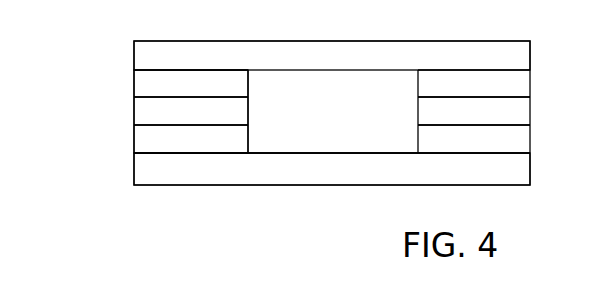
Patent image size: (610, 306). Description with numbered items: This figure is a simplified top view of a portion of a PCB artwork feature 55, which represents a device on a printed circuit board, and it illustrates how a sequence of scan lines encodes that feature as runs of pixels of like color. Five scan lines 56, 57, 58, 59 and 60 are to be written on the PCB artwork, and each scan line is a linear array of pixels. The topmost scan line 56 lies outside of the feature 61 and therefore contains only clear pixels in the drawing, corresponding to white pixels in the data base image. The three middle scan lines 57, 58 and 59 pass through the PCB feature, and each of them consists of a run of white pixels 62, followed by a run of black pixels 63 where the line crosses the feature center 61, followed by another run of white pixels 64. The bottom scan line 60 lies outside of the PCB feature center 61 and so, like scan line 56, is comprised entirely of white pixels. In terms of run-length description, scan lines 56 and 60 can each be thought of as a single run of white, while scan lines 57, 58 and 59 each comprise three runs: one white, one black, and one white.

The PCB artwork feature 55 is at (248, 195).
The scan line 56 is at (522, 52).
The scan line 57 is at (520, 80).
The scan line 58 is at (520, 110).
The scan line 59 is at (520, 142).
The scan line 60 is at (520, 173).
The feature 61 is at (392, 155).
The run of white pixels 62 is at (150, 82).
The run of black pixels 63 is at (263, 70).
The run of white pixels 64 is at (438, 78).